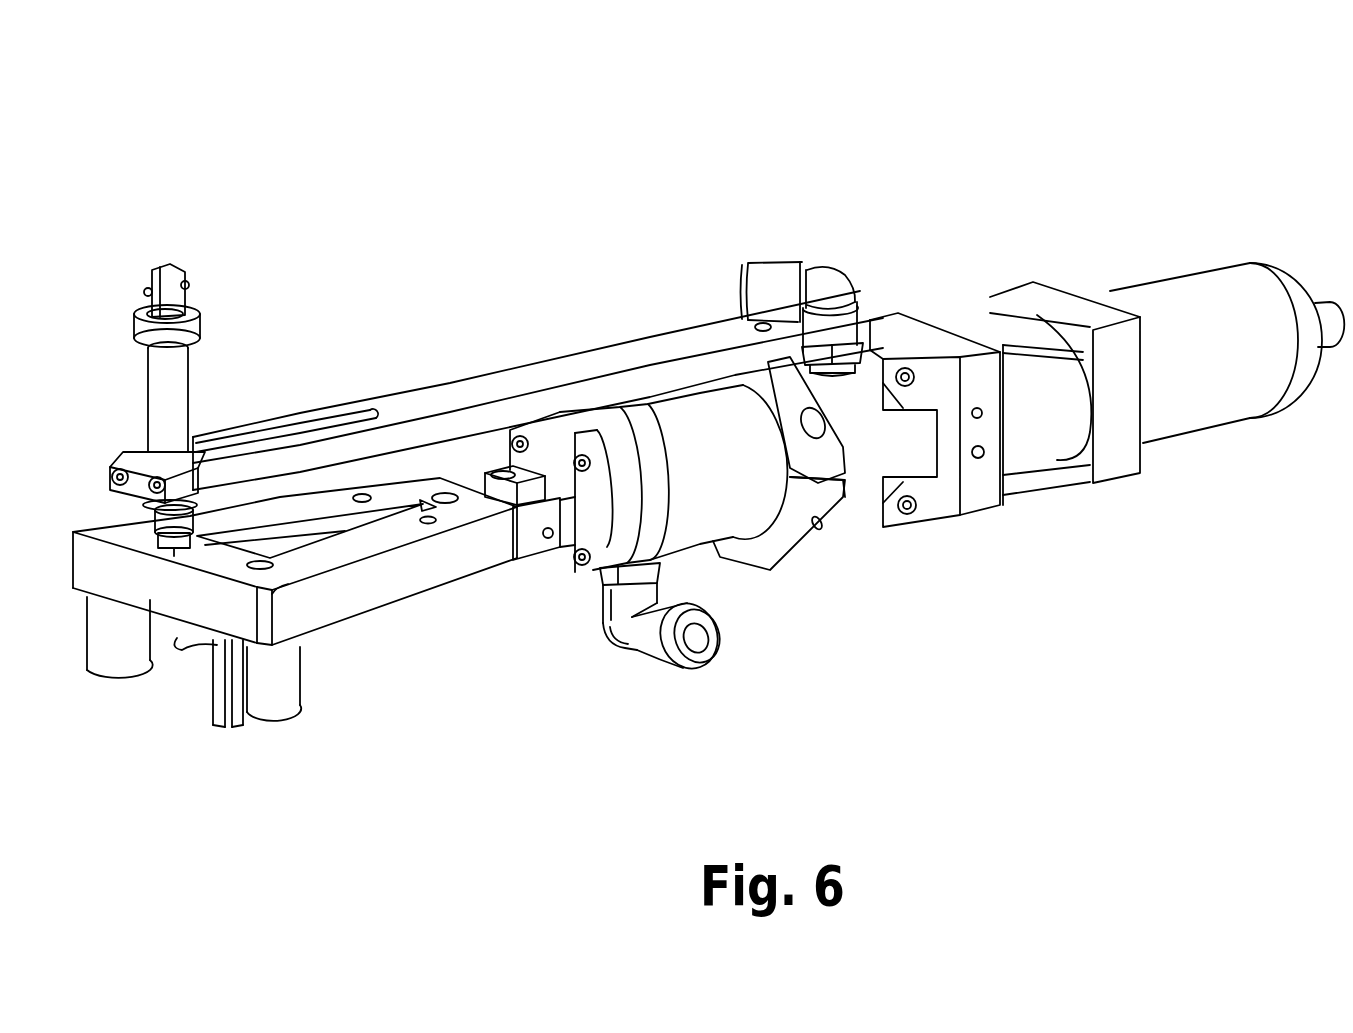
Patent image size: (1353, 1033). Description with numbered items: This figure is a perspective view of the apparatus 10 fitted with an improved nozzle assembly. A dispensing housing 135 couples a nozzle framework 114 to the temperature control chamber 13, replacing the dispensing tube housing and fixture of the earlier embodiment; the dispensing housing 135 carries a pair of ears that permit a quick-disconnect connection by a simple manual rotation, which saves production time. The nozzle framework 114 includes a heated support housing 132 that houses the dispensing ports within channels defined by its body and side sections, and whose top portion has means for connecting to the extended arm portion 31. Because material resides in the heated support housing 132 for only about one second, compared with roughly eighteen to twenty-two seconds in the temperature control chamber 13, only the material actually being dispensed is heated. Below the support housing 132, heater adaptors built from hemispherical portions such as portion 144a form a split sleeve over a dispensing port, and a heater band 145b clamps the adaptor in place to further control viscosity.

The filling machine / device 10 is at (763, 150).
The extended arm portion 31 is at (520, 367).
The temperature control chamber 13 is at (718, 468).
The dispensing housing 135 is at (555, 512).
The heated support housing 132 is at (358, 618).
The nozzle framework 114 is at (462, 612).
The hemispherical portion 144a is at (100, 680).
The heater band 145b is at (270, 727).